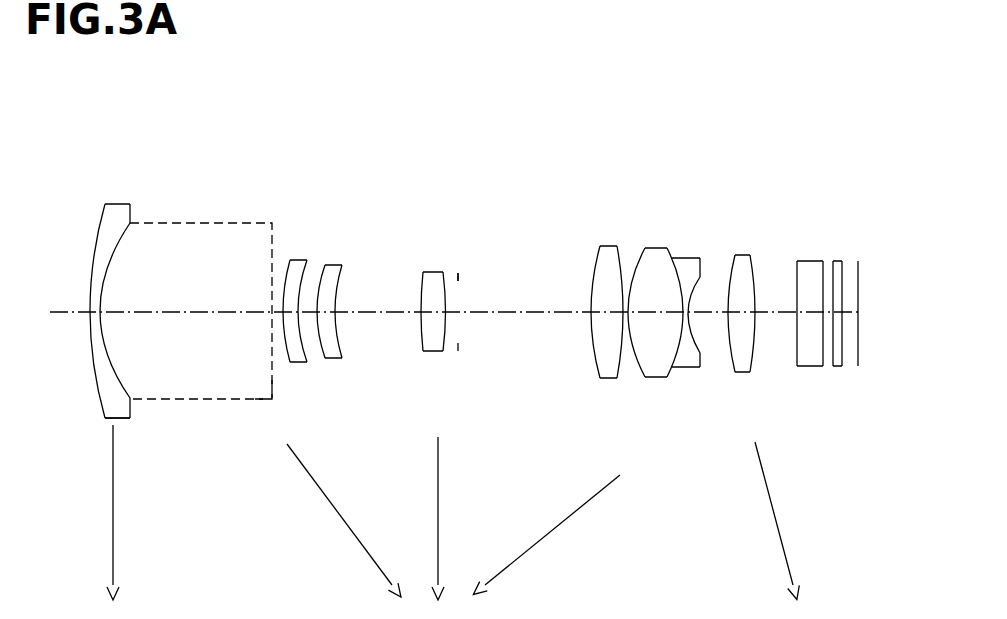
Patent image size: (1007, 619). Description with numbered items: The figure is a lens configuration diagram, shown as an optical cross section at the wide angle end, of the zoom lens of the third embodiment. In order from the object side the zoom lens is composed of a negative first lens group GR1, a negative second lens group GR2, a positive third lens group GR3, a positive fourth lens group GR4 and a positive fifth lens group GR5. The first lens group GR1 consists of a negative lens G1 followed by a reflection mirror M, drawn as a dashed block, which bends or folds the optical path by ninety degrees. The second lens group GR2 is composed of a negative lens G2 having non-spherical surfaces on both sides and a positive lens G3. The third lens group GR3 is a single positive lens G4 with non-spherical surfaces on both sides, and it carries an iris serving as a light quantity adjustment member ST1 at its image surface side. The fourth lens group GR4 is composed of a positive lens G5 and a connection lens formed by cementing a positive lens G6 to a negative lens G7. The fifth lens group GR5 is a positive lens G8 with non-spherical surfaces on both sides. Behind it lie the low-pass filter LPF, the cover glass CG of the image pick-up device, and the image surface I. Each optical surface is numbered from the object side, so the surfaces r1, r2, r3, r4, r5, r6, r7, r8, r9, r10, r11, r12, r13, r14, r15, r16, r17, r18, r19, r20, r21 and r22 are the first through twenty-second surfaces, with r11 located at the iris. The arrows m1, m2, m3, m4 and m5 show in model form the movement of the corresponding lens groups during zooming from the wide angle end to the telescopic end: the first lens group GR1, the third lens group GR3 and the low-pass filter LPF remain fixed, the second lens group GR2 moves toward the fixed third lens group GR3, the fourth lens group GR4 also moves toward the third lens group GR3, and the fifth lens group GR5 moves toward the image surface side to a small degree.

The first lens group GR1 is at (142, 123).
The second lens group GR2 is at (277, 123).
The third lens group GR3 is at (452, 123).
The fourth lens group GR4 is at (585, 123).
The fifth lens group GR5 is at (715, 123).
The negative lens G1 is at (109, 291).
The negative lens G2 is at (285, 248).
The positive lens G3 is at (337, 246).
The positive lens G4 is at (432, 243).
The positive lens G5 is at (597, 256).
The positive lens G6 is at (663, 256).
The negative lens G7 is at (700, 251).
The positive lens G8 is at (737, 275).
The reflection mirror M is at (188, 393).
The light quantity adjustment member ST1 is at (459, 346).
The low-pass filter LPF is at (811, 271).
The cover glass CG is at (843, 360).
The image surface I is at (860, 343).
The first surface r1 is at (94, 256).
The second surface r2 is at (127, 237).
The third surface r3 is at (131, 404).
The fourth surface r4 is at (272, 403).
The fifth surface r5 is at (286, 262).
The sixth surface r6 is at (301, 265).
The seventh surface r7 is at (322, 268).
The eighth surface r8 is at (338, 268).
The ninth surface r9 is at (423, 274).
The tenth surface r10 is at (445, 272).
The eleventh surface r11 is at (459, 278).
The twelfth surface r12 is at (596, 263).
The thirteenth surface r13 is at (621, 252).
The fourteenth surface r14 is at (640, 259).
The fifteenth surface r15 is at (680, 258).
The sixteenth surface r16 is at (700, 285).
The seventeenth surface r17 is at (731, 373).
The eighteenth surface r18 is at (752, 262).
The nineteenth surface r19 is at (800, 367).
The twentieth surface r20 is at (826, 367).
The twenty-first surface r21 is at (835, 262).
The twenty-second surface r22 is at (844, 265).
The arrow m1 is at (115, 520).
The arrow m2 is at (352, 532).
The arrow m3 is at (440, 520).
The arrow m4 is at (535, 545).
The arrow m5 is at (777, 523).